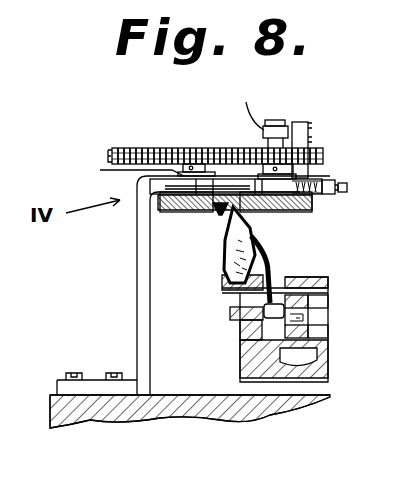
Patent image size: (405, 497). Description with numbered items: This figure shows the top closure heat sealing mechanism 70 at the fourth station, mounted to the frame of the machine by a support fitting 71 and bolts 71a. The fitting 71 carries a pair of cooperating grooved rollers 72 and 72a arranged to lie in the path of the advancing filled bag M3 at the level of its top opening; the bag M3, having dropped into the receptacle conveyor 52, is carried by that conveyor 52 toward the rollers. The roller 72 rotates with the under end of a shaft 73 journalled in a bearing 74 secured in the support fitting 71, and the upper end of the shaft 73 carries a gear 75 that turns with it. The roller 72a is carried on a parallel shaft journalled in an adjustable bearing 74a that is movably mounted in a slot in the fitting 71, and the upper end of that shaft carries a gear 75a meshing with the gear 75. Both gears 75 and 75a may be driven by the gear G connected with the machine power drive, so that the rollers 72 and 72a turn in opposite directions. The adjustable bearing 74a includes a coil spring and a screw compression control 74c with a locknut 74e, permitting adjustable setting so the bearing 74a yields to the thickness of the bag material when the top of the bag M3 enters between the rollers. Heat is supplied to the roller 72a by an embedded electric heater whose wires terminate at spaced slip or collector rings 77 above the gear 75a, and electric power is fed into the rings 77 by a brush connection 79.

The top closure heat sealing mechanism 70 is at (306, 95).
The support fitting 71 is at (136, 263).
The bolts 71a is at (110, 372).
The roller 72 is at (170, 213).
The roller 72a is at (318, 230).
The shaft 73 is at (200, 130).
The bearing 74 is at (136, 176).
The adjustable bearing 74a is at (318, 172).
The screw compression control 74c is at (348, 188).
The locknut 74e is at (330, 199).
The gear 75 is at (172, 132).
The gear 75a is at (326, 150).
The slip or collector rings 77 is at (260, 117).
The brush connection 79 is at (317, 114).
The receptacle conveyor 52 is at (340, 348).
The bag M3 is at (232, 258).
The gear G is at (128, 120).